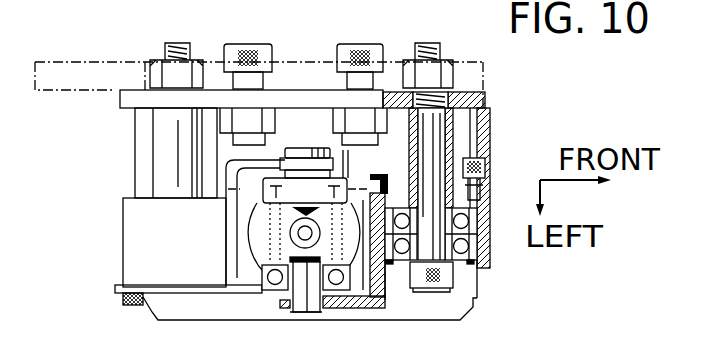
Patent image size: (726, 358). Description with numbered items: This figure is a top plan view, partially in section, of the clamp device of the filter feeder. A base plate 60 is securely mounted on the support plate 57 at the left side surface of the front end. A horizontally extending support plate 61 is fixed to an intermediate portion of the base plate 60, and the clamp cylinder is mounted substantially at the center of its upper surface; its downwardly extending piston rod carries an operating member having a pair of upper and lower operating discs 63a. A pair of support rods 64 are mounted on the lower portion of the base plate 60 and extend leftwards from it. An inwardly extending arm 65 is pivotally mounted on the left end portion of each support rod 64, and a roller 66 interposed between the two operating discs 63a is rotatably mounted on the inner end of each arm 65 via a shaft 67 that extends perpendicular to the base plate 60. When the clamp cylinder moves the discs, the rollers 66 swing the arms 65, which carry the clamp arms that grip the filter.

The support plate 57 is at (75, 62).
The base plate 60 is at (308, 63).
The support plate 61 is at (478, 298).
The operating disc 63a is at (254, 248).
The support rod 64 is at (438, 145).
The arm 65 is at (347, 158).
The roller 66 is at (302, 193).
The shaft 67 is at (302, 298).